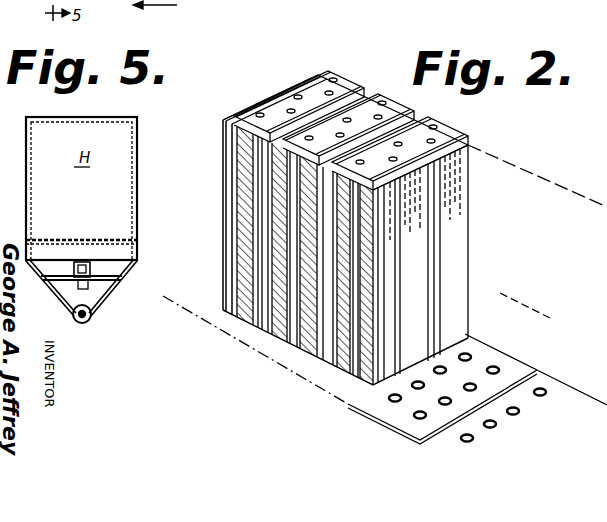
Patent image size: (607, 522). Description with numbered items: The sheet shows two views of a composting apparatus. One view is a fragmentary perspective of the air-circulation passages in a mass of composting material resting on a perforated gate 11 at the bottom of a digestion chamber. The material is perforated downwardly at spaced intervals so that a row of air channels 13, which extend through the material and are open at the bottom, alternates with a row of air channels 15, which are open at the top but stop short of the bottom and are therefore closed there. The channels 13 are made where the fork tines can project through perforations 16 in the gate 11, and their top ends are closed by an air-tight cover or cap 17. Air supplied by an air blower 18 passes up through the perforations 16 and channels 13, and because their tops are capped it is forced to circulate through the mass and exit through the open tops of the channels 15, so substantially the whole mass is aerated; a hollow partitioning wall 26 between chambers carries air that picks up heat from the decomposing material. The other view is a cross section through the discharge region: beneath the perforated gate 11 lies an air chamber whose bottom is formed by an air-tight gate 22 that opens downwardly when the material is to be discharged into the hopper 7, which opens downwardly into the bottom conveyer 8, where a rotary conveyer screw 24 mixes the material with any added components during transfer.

In FIG. 5, the hopper 7 is at (63, 297).
In FIG. 5, the bottom conveyer 8 is at (92, 322).
In FIG. 5, the perforated gates 11 is at (79, 240).
In FIG. 2, the perforated gates 11 is at (545, 376).
In FIG. 2, the air channels 13 is at (271, 333).
In FIG. 2, the air channels 15 is at (306, 347).
In FIG. 2, the perforations 16 is at (495, 367).
In FIG. 2, the air-tight cover or cap 17 is at (400, 115).
In FIG. 5, the air blower 18 is at (91, 270).
In FIG. 5, the air-tight gate 22 is at (62, 276).
In FIG. 5, the rotary conveyer screw 24 is at (96, 304).
In FIG. 2, the hollow partitioning walls 26 is at (247, 160).